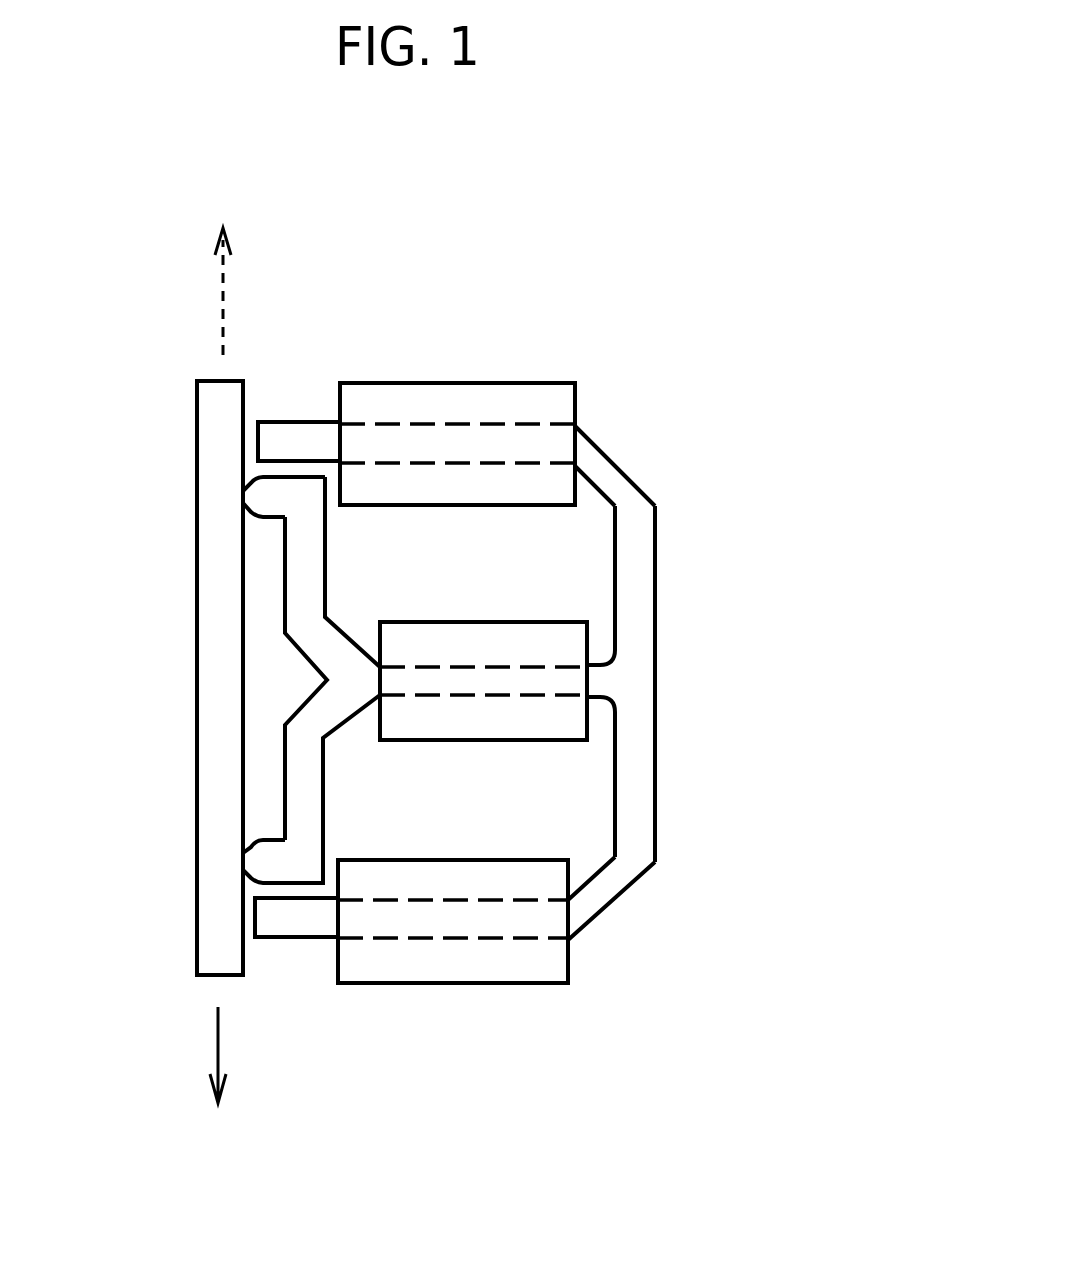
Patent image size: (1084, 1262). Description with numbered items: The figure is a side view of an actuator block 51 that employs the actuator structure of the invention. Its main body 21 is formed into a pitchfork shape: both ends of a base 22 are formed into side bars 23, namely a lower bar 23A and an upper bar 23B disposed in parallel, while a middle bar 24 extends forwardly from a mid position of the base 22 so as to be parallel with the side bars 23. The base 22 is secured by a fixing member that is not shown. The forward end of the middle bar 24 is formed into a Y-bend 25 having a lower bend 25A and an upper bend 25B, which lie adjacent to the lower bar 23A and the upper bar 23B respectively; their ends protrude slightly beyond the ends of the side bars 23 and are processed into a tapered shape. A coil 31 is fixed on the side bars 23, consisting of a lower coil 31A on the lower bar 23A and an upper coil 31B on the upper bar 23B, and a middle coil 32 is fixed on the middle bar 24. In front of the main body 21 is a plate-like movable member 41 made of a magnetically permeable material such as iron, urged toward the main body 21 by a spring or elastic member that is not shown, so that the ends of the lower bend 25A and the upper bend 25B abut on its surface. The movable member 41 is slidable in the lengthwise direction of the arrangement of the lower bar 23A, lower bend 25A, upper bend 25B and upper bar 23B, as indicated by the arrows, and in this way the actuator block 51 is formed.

The main body 21 is at (721, 683).
The base 22 is at (638, 563).
The side bars 23 is at (680, 683).
The lower bar 23A is at (493, 918).
The upper bar 23B is at (527, 442).
The middle bar 24 is at (513, 680).
The Y-bend 25 is at (216, 660).
The lower bend 25A is at (257, 862).
The upper bend 25B is at (265, 495).
The coil 31 is at (415, 681).
The lower coil 31A is at (463, 963).
The upper coil 31B is at (457, 398).
The middle coil 32 is at (444, 634).
The movable member 41 is at (208, 955).
The actuator block 51 is at (670, 370).